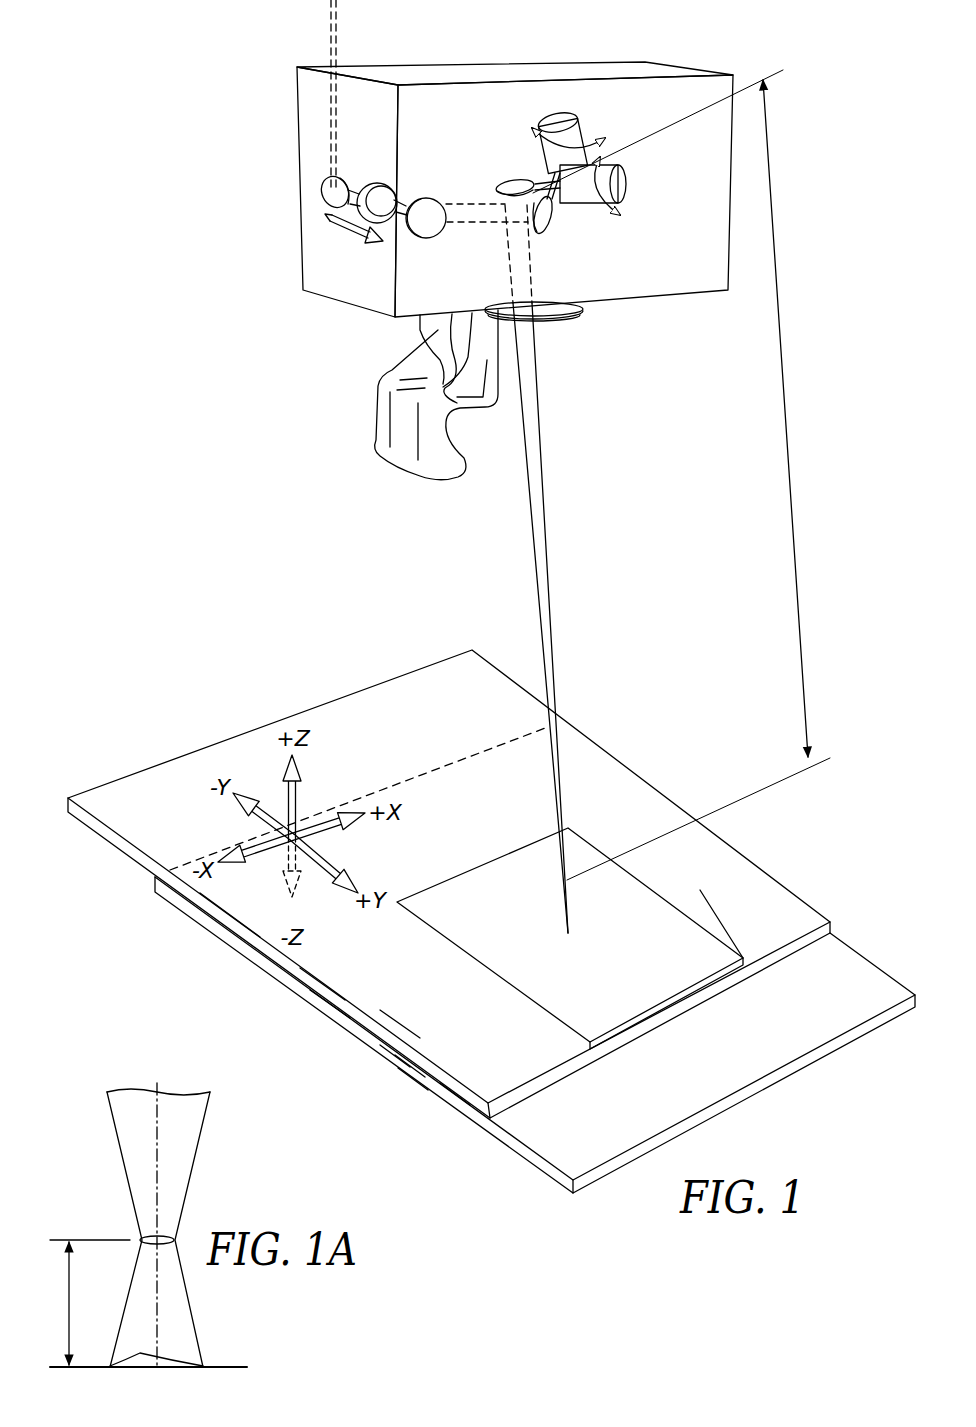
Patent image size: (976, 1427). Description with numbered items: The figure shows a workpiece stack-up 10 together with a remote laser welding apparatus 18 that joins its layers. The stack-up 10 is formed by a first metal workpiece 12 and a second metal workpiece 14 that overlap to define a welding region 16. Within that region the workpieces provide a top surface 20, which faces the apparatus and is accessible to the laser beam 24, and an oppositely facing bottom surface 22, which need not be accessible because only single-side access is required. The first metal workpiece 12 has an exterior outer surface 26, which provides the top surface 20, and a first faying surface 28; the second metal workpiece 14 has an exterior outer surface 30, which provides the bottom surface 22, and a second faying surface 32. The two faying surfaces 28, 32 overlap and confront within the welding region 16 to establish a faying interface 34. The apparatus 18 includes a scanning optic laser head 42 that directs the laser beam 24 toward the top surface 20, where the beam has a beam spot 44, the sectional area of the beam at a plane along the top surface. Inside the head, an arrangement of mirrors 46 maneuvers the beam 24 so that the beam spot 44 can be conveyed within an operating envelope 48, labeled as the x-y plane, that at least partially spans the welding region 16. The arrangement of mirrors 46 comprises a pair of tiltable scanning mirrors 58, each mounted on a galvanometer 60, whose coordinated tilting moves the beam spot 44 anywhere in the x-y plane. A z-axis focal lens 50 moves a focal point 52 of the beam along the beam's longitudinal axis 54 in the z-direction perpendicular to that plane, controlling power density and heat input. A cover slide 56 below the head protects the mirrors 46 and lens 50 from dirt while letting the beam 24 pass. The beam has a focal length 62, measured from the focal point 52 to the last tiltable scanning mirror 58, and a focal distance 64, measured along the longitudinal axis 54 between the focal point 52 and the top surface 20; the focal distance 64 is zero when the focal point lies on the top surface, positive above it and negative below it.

In FIG. 1, the workpiece stack-up 10 is at (237, 960).
In FIG. 1, the first metal workpiece 12 is at (328, 993).
In FIG. 1, the second metal workpiece 14 is at (330, 1007).
In FIG. 1, the welding region 16 is at (700, 890).
In FIG. 1, the remote laser welding apparatus 18 is at (275, 267).
In FIG. 1, the top surface 20 is at (778, 897).
In FIG. 1A, the top surface 20 is at (224, 1364).
In FIG. 1, the bottom surface 22 is at (203, 931).
In FIG. 1, the laser beam 24 is at (537, 512).
In FIG. 1A, the laser beam 24 is at (135, 1117).
In FIG. 1, the exterior outer surface 26 is at (398, 1022).
In FIG. 1A, the exterior outer surface 26 is at (103, 1366).
In FIG. 1, the first faying surface 28 is at (418, 1065).
In FIG. 1, the exterior outer surface 30 is at (408, 1072).
In FIG. 1, the second faying surface 32 is at (455, 1088).
In FIG. 1, the faying interface 34 is at (393, 1055).
In FIG. 1, the scanning optic laser head 42 is at (298, 127).
In FIG. 1A, the beam spot 44 is at (156, 1347).
In FIG. 1, the arrangement of mirrors 46 is at (493, 180).
In FIG. 1, the operating envelope 48 is at (527, 845).
In FIG. 1, the z-axis focal lens 50 is at (392, 232).
In FIG. 1A, the focal point 52 is at (147, 1232).
In FIG. 1A, the longitudinal axis 54 is at (158, 1185).
In FIG. 1, the cover slide 56 is at (577, 316).
In FIG. 1, the tiltable scanning mirrors 58 is at (511, 180).
In FIG. 1, the galvanometer 60 is at (571, 132).
In FIG. 1, the focal length 62 is at (787, 426).
In FIG. 1A, the focal distance 64 is at (90, 1302).